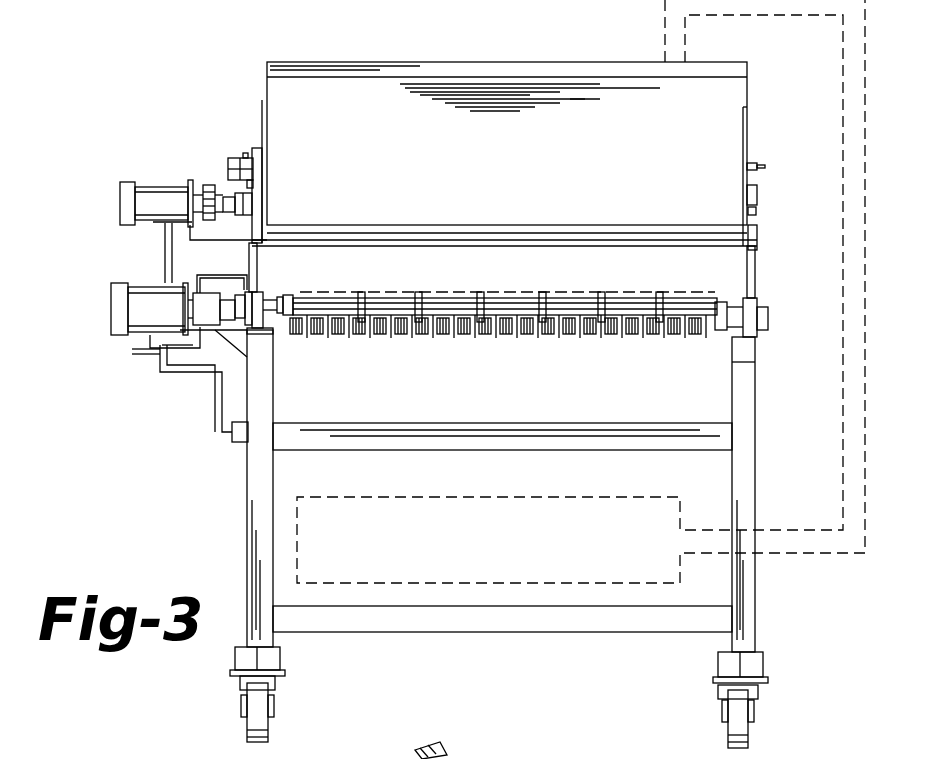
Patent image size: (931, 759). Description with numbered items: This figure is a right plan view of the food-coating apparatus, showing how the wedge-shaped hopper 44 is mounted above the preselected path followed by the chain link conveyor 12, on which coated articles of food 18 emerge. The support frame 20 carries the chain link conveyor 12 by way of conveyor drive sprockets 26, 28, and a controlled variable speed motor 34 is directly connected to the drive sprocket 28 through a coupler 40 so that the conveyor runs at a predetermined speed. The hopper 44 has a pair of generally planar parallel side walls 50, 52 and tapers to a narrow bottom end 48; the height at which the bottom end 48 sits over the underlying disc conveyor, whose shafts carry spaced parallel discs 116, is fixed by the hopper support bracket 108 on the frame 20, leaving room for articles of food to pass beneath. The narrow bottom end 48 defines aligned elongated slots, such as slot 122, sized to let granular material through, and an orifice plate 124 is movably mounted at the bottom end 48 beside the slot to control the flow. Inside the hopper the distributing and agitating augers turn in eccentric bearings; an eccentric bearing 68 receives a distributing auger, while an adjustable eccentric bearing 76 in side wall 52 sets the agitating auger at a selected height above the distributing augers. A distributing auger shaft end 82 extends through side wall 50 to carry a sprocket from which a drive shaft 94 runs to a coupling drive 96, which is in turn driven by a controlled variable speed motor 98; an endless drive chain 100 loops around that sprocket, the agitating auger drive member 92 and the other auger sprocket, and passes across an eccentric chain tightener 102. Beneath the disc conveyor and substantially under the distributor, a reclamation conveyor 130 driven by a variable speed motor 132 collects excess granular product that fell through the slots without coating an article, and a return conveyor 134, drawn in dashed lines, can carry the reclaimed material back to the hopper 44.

The chain link conveyor 12 is at (595, 300).
The coated articles of food 18 is at (413, 290).
The support frame 20 is at (742, 484).
The conveyor drive sprocket 26 is at (235, 307).
The conveyor drive sprocket 28 is at (759, 303).
The controlled variable speed motor 34 is at (120, 303).
The coupler 40 is at (205, 307).
The hopper 44 is at (718, 103).
The narrow bottom end 48 is at (752, 234).
The side wall 50 is at (267, 105).
The side wall 52 is at (749, 128).
The eccentric bearing 68 is at (755, 203).
The eccentric bearing 76 is at (752, 167).
The shaft end 82 is at (235, 212).
The drive member 92 is at (238, 158).
The drive shaft 94 is at (232, 197).
The coupling drive 96 is at (209, 185).
The controlled variable speed motor 98 is at (142, 198).
The endless drive chain 100 is at (245, 153).
The eccentric chain tightener 102 is at (252, 184).
The hopper support bracket 108 is at (256, 262).
The disc 116 is at (358, 340).
The elongated slot 122 is at (480, 749).
The orifice plate 124 is at (707, 245).
The reclamation conveyor 130 is at (630, 418).
The variable speed motor 132 is at (240, 445).
The return conveyor 134 is at (795, 540).